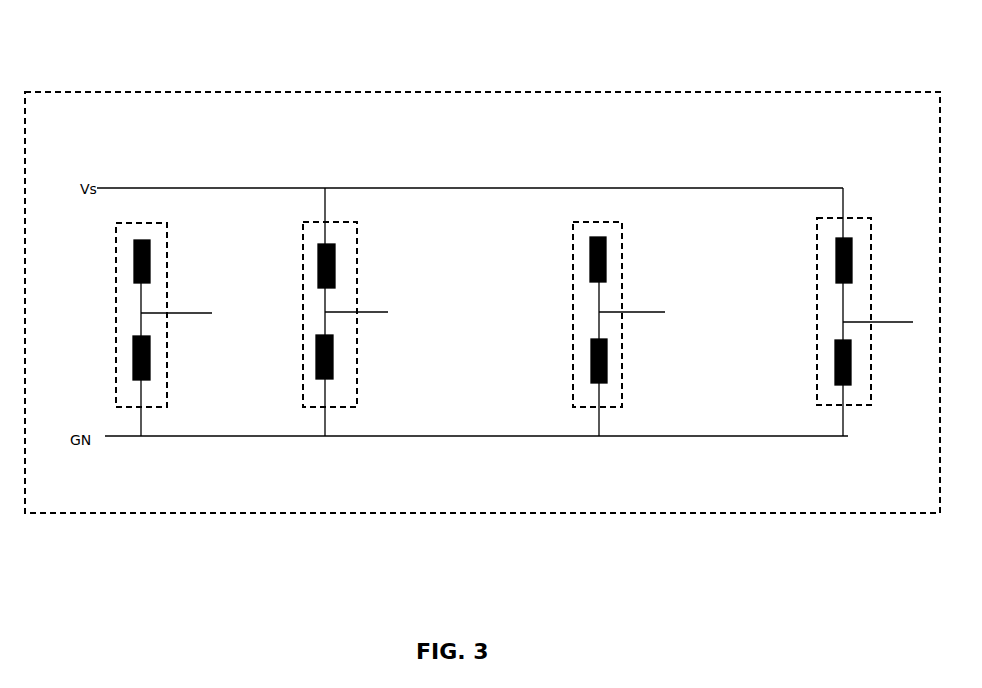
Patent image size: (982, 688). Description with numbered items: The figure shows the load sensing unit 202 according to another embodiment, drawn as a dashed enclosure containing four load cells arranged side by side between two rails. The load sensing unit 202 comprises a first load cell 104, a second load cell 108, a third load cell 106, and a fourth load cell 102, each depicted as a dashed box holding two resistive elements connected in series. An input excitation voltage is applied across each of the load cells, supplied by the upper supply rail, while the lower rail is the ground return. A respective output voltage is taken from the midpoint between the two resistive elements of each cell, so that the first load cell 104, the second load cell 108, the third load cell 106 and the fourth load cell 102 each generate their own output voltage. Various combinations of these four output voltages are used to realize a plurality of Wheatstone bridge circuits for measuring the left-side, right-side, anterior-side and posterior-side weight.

The load sensing unit 202 is at (718, 92).
The first load cell 104 is at (165, 225).
The second load cell 108 is at (355, 223).
The third load cell 106 is at (622, 223).
The fourth load cell 102 is at (860, 218).